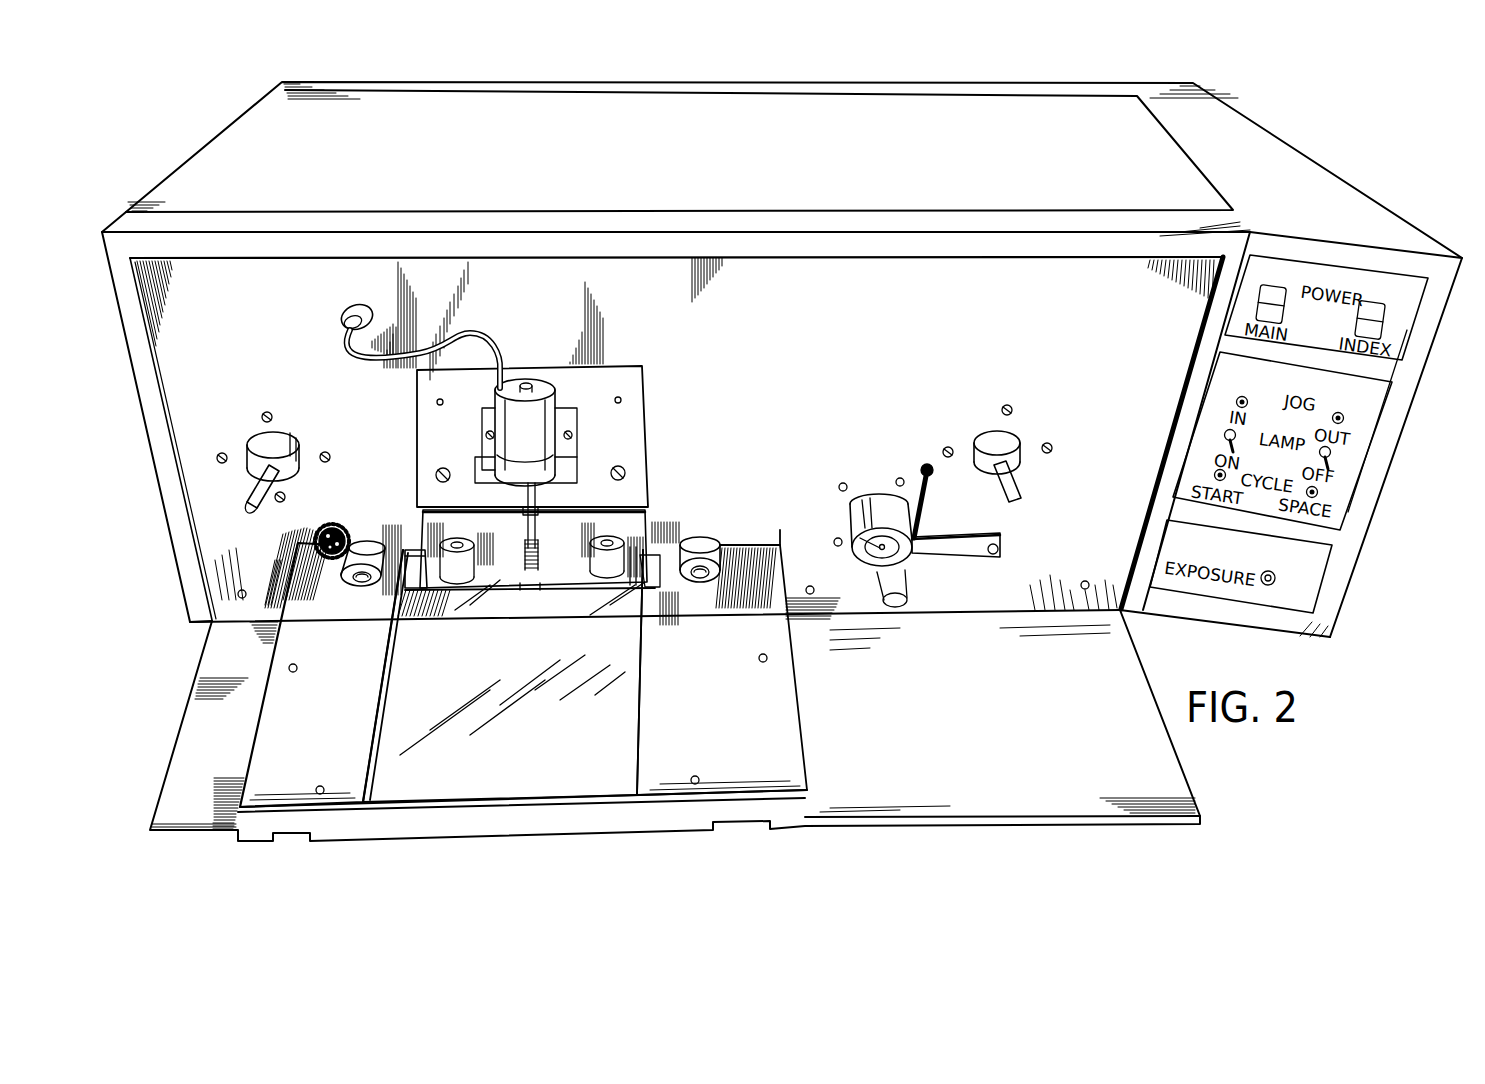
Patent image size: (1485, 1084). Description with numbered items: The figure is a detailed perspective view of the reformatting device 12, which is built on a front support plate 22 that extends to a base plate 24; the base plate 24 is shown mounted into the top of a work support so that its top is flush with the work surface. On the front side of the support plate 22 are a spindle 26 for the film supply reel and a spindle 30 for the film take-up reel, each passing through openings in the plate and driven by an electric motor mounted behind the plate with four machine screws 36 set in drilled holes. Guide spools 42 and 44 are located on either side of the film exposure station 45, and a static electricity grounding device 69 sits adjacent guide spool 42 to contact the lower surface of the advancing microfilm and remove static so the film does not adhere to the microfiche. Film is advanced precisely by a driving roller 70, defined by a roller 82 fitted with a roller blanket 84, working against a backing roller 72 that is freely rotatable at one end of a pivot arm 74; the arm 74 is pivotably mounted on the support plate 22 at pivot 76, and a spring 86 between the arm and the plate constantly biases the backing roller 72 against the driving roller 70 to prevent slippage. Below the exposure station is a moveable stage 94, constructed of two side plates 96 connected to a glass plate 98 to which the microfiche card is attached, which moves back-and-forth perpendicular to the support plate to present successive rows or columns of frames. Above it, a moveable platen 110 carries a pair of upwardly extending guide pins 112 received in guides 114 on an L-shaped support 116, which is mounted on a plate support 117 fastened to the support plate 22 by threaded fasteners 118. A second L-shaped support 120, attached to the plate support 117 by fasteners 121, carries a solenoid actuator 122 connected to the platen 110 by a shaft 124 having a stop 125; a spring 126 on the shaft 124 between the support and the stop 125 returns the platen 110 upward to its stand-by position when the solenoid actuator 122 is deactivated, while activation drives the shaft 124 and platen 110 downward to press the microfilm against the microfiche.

The reformatting device 12 is at (258, 268).
The front support plate 22 is at (172, 347).
The base plate 24 is at (215, 700).
The spindle 26 is at (262, 445).
The spindle 30 is at (1018, 460).
The machine screws 36 is at (272, 412).
The guide spool 42 is at (352, 587).
The guide spool 44 is at (710, 583).
The film exposure station 45 is at (660, 422).
The static electricity grounding device 69 is at (316, 543).
The driving roller 70 is at (855, 520).
The backing roller 72 is at (864, 604).
The pivot arm 74 is at (948, 560).
The pivot 76 is at (992, 558).
The roller 82 is at (870, 552).
The roller blanket 84 is at (844, 465).
The spring 86 is at (920, 478).
The moveable stage 94 is at (808, 738).
The side plates 96 is at (283, 738).
The glass plate 98 is at (546, 783).
The moveable platen 110 is at (418, 590).
The guide pins 112 is at (452, 543).
The guides 114 is at (447, 583).
The L-shaped support 116 is at (510, 583).
The plate support 117 is at (628, 387).
The threaded fasteners 118 is at (436, 474).
The L-shaped support 120 is at (570, 460).
The fasteners 121 is at (490, 430).
The solenoid actuator 122 is at (512, 452).
The shaft 124 is at (523, 500).
The stop 125 is at (540, 525).
The spring 126 is at (538, 583).